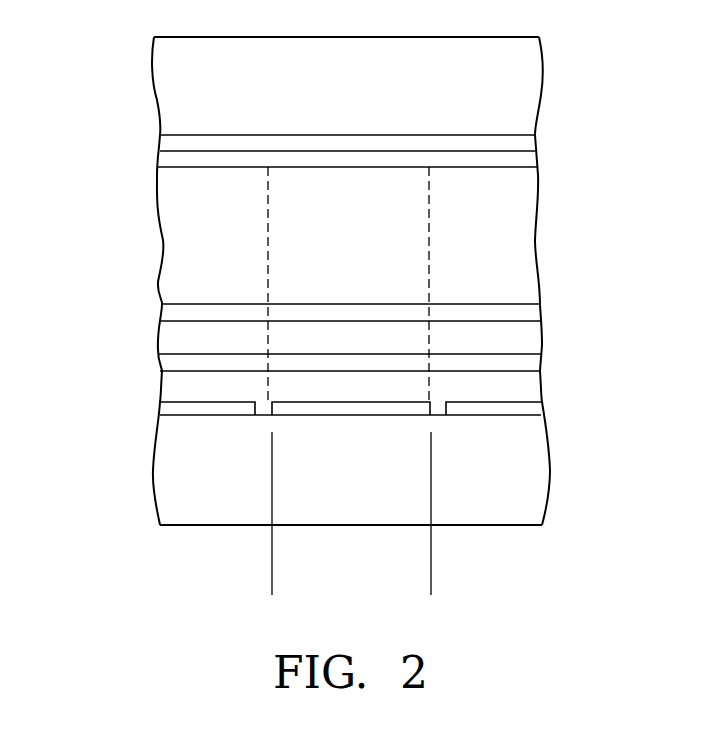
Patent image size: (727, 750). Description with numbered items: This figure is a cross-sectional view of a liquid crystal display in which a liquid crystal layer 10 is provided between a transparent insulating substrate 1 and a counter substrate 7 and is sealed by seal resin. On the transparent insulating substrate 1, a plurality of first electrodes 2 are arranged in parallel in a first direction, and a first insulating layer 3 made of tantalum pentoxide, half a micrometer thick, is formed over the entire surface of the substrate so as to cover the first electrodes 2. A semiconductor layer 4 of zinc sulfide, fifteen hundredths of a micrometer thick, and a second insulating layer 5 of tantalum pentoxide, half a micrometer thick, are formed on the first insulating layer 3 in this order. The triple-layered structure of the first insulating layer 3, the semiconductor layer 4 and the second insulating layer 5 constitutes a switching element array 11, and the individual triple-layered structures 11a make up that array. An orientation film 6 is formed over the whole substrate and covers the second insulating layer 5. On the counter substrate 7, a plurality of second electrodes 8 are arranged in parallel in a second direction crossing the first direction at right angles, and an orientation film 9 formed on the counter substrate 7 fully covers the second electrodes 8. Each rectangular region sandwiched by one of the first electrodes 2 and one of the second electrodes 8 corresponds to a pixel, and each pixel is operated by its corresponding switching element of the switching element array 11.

The transparent insulating substrate 1 is at (535, 472).
The first electrodes 2 is at (533, 411).
The first insulating layer 3 is at (525, 390).
The semiconductor layer 4 is at (530, 364).
The second insulating layer 5 is at (528, 340).
The orientation film 6 is at (525, 313).
The counter substrate 7 is at (520, 97).
The second electrodes 8 is at (524, 143).
The orientation film 9 is at (525, 158).
The liquid crystal layer 10 is at (525, 240).
The switching element array 11 is at (665, 322).
The triple-layered structures 11a is at (272, 573).